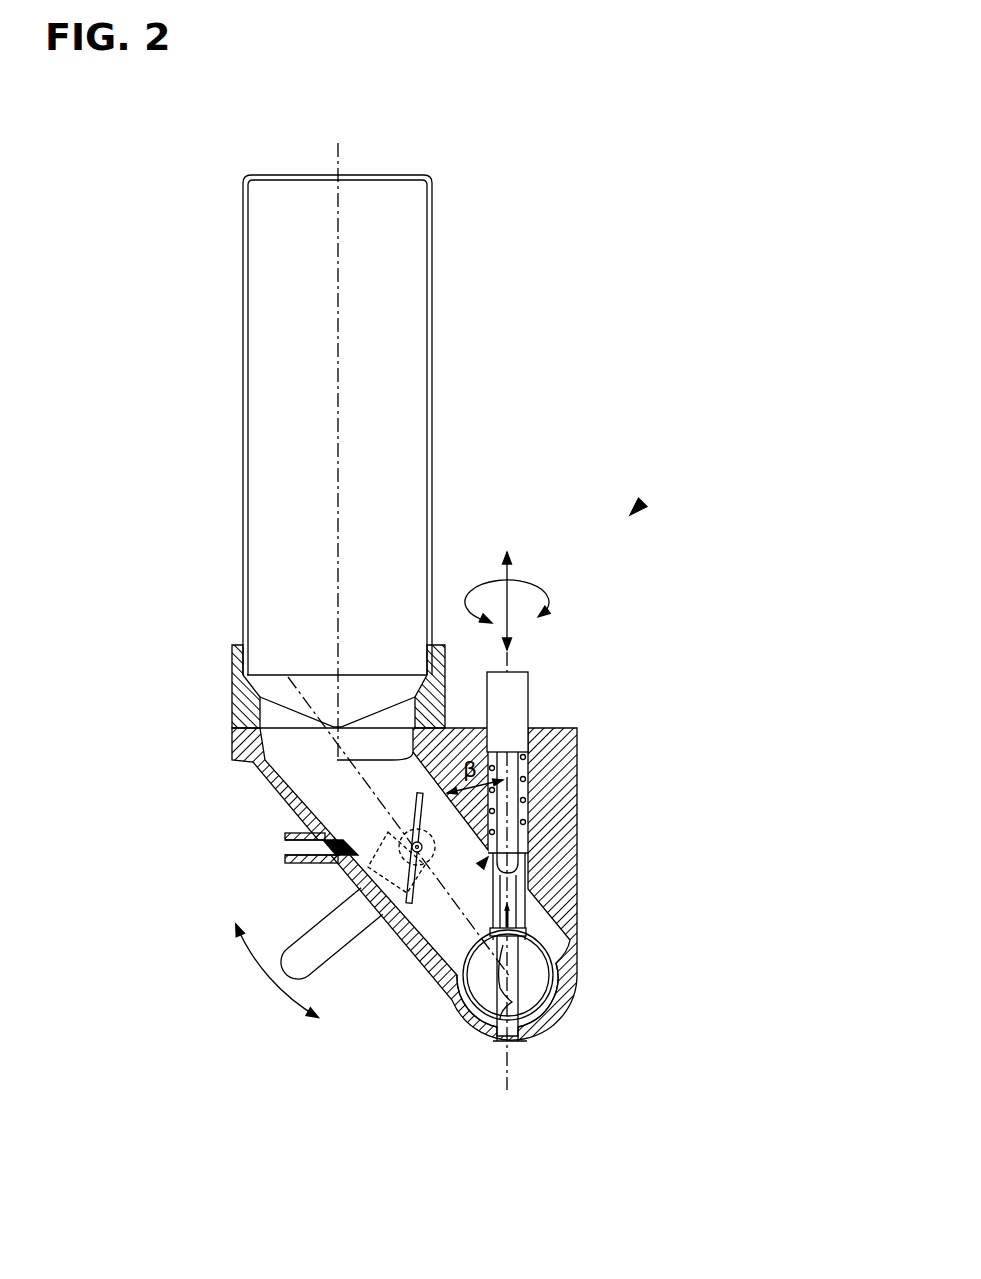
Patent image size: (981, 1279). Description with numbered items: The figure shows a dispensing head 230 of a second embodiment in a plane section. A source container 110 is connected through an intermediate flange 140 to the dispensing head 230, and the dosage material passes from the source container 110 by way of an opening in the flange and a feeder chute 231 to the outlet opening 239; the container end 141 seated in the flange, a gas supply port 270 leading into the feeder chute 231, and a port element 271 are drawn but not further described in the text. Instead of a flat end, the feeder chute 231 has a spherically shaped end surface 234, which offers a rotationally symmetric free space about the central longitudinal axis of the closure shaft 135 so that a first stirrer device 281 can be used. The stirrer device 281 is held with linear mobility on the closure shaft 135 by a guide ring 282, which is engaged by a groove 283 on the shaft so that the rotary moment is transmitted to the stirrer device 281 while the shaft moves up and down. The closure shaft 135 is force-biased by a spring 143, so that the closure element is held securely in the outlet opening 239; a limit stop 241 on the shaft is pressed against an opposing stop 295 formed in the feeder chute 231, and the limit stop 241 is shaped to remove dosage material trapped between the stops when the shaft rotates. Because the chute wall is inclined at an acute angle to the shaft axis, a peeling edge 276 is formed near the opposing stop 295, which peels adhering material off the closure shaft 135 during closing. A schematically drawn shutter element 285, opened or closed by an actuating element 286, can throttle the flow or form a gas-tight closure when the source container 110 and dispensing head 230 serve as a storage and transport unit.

The source container 110 is at (300, 428).
The bottle neck 141 is at (318, 685).
The intermediate flange 140 is at (235, 698).
The shutter element 285 is at (417, 812).
The plug 271 is at (293, 833).
The port 270 is at (297, 850).
The actuating element 286 is at (323, 937).
The peeling edge 276 is at (486, 860).
The feeder chute 231 is at (440, 940).
The outlet opening 239 is at (512, 1043).
The dispensing head 230 is at (636, 509).
The closure shaft 135 is at (528, 753).
The spring 143 is at (523, 800).
The opposing stop 295 is at (528, 847).
The limit stop 241 is at (524, 855).
The groove 283 is at (509, 918).
The guide ring 282 is at (526, 929).
The first stirrer device 281 is at (552, 972).
The spherically shaped end surface 234 is at (543, 995).